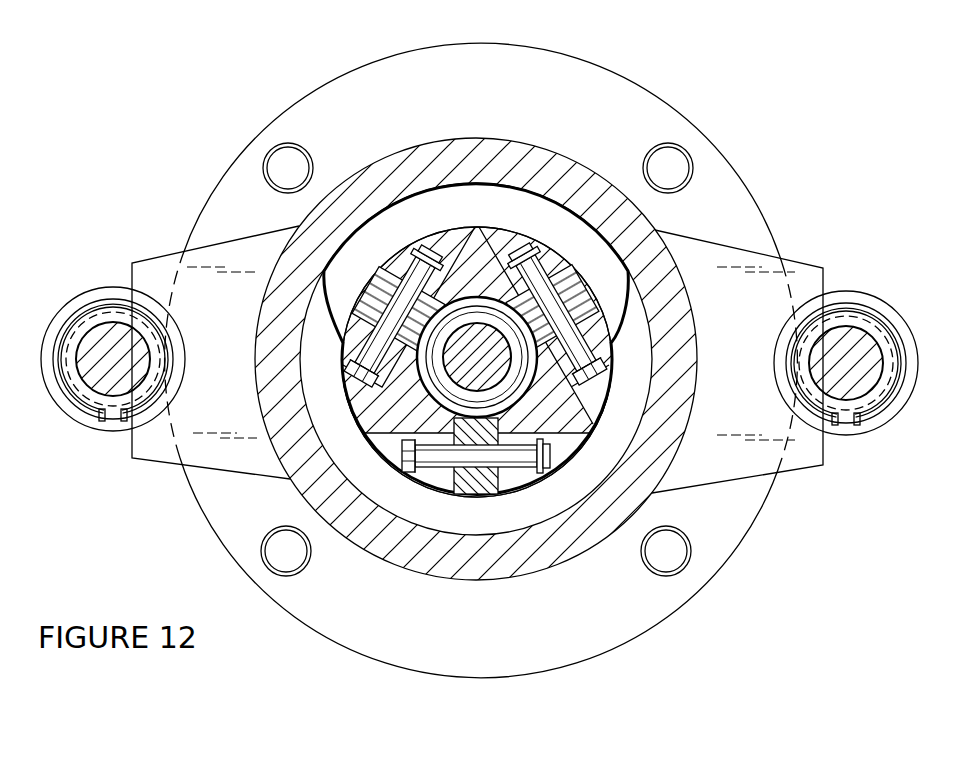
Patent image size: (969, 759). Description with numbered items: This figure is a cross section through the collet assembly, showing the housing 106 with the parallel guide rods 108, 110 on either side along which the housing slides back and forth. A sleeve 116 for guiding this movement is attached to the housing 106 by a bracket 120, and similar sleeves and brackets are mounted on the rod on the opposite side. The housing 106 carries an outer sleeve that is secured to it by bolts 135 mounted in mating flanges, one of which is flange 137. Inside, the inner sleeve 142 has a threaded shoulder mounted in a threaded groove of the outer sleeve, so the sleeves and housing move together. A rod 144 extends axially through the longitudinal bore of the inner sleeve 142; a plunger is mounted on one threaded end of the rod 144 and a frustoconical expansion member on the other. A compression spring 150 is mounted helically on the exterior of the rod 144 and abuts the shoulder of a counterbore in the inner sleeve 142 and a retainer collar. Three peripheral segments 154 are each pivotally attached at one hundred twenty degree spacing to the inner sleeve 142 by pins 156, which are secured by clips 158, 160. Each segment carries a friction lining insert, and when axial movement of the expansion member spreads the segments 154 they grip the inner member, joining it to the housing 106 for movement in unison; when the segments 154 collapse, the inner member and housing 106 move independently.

The housing 106 is at (390, 160).
The guide rod 108 is at (92, 330).
The guide rod 110 is at (848, 332).
The sleeve 116 is at (92, 410).
The bracket 120 is at (180, 253).
The bolts 135 is at (266, 153).
The flange 137 is at (580, 60).
The inner sleeve 142 is at (470, 238).
The rod 144 is at (498, 389).
The compression spring 150 is at (438, 400).
The peripheral segments 154 is at (370, 299).
The pins 156 is at (354, 387).
The clip 158 is at (422, 249).
The clip 160 is at (536, 256).